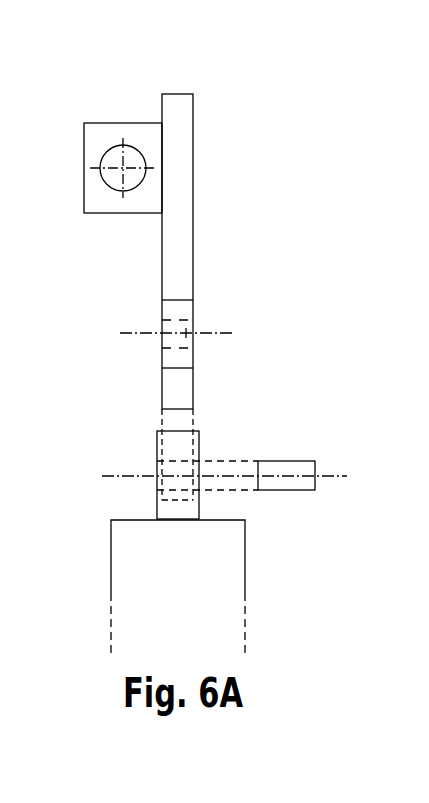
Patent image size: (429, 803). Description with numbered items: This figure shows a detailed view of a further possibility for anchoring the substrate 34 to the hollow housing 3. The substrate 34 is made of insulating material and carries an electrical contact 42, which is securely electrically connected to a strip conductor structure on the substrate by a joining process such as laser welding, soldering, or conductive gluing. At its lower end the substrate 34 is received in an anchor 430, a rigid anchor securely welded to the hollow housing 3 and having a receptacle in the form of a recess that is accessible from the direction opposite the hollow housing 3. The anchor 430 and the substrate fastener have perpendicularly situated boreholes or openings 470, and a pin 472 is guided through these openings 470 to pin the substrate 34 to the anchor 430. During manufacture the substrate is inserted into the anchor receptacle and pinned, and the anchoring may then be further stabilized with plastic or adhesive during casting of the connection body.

The electrical contact 42 is at (107, 123).
The substrate 34 is at (182, 165).
The boreholes or openings 470 is at (196, 332).
The anchor 430 is at (160, 500).
The pin 472 is at (285, 465).
The hollow housing 3 is at (186, 597).